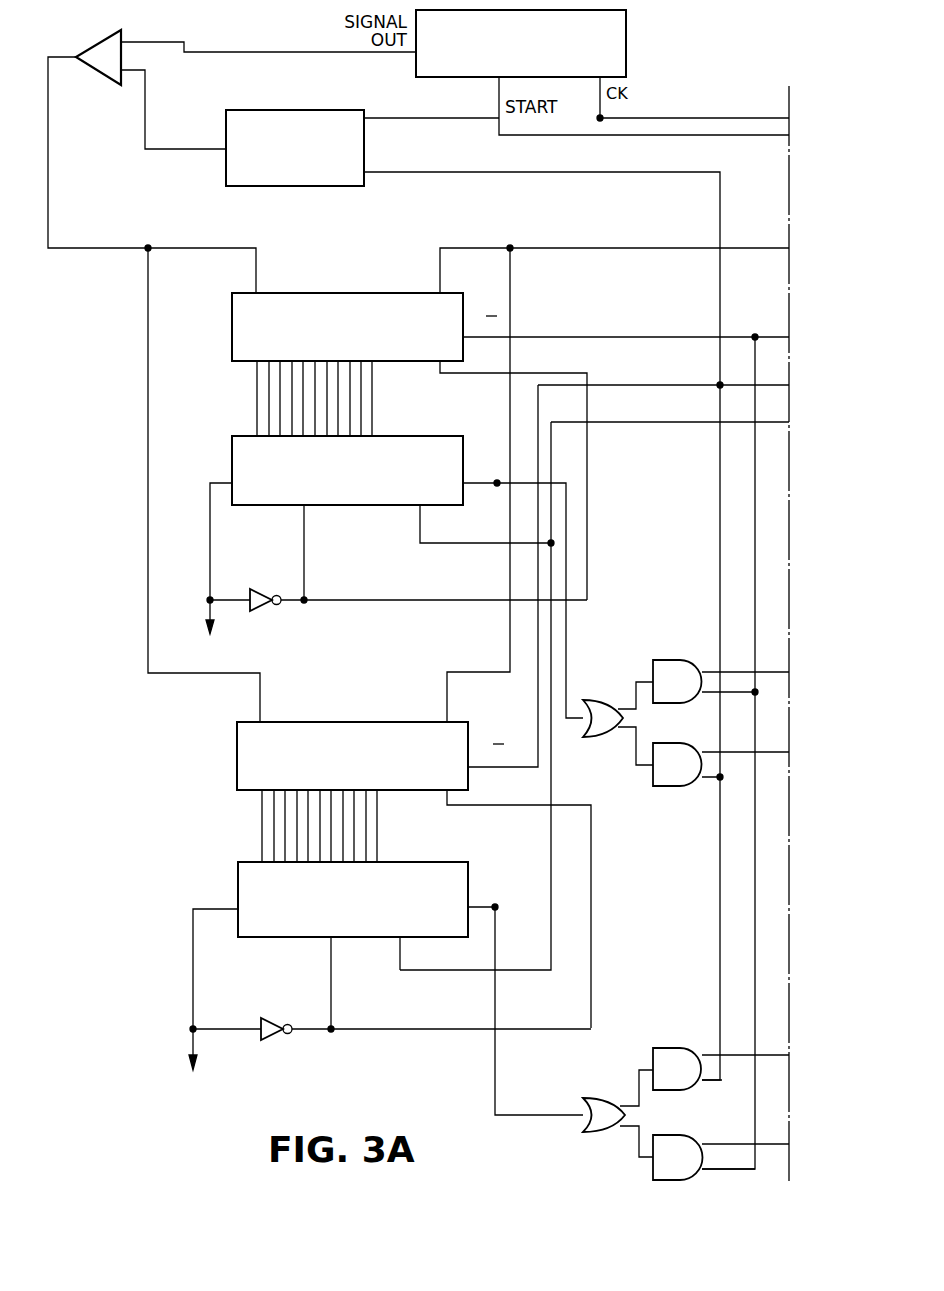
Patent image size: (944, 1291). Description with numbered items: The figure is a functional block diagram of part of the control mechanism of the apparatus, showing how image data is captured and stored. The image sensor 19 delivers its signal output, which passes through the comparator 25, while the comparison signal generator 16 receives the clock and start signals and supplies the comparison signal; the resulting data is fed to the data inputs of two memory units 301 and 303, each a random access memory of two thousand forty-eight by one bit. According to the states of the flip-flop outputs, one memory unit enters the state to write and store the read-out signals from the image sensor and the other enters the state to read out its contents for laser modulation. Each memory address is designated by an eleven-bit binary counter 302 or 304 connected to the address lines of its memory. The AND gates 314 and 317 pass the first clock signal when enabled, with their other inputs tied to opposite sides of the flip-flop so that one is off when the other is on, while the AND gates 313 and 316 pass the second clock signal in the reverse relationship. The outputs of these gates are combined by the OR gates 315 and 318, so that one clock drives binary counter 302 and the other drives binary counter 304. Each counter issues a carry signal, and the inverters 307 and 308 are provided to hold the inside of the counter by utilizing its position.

The comparator 25 is at (97, 44).
The image sensor 19 is at (626, 40).
The comparison signal generator 16 is at (308, 187).
The memory unit 301 is at (352, 293).
The binary counter 302 is at (430, 436).
The memory unit 303 is at (360, 722).
The binary counter 304 is at (460, 862).
The inverter 307 is at (262, 606).
The inverter 308 is at (272, 1036).
The AND gate 313 is at (662, 660).
The AND gate 314 is at (690, 786).
The OR gate 315 is at (606, 703).
The AND gate 316 is at (660, 1048).
The AND gate 317 is at (675, 1135).
The OR gate 318 is at (596, 1101).